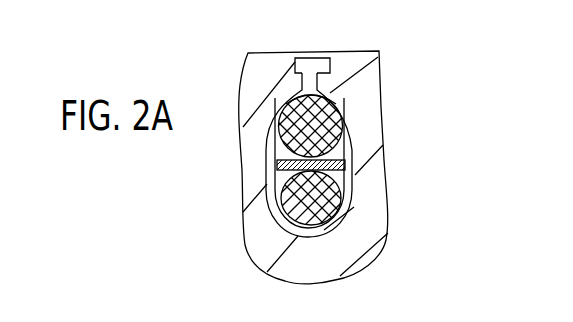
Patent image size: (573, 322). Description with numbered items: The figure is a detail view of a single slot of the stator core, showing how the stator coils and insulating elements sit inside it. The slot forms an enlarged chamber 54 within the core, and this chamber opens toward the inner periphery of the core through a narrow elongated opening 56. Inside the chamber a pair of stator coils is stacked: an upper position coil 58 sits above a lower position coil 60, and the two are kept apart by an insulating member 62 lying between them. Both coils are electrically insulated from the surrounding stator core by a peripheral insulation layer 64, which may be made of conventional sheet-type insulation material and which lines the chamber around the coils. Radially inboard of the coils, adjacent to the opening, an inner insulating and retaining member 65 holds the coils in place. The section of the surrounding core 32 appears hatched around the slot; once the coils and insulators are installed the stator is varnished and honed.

The housing block 32 is at (369, 223).
The enlarged chamber 54 is at (343, 178).
The narrow elongated opening 56 is at (299, 57).
The upper position coil 58 is at (287, 112).
The lower position coil 60 is at (280, 186).
The insulating member 62 is at (277, 147).
The peripheral insulation layer 64 is at (336, 122).
The inner insulating and retaining member 65 is at (331, 75).